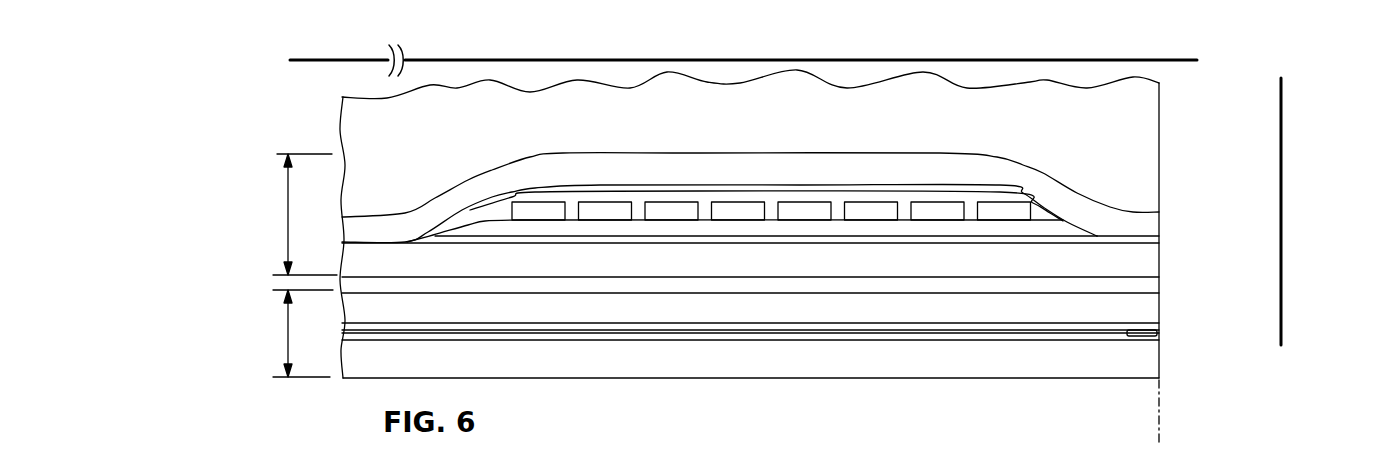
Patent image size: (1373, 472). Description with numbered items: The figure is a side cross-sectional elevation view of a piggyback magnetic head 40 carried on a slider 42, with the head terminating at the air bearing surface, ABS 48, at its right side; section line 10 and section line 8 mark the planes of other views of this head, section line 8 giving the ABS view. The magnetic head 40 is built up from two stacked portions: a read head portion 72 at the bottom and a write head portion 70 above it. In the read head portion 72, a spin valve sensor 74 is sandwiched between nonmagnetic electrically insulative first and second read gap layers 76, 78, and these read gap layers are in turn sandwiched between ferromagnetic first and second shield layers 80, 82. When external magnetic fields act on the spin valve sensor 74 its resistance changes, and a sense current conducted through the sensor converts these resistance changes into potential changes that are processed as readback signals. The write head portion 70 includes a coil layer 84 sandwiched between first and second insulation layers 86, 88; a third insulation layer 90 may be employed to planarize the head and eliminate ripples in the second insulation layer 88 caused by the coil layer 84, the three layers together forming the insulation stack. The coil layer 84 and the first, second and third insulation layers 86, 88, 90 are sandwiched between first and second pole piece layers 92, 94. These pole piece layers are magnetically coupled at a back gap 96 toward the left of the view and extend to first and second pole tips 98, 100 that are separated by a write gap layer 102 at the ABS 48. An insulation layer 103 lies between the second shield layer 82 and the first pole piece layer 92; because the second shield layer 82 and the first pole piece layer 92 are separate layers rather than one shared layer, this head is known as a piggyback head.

The section line 8- 8 is at (1297, 85).
The section line 10- 10 is at (299, 15).
The piggyback magnetic head 40 is at (320, 104).
The slider 42 is at (1145, 112).
The ABS 48 is at (1159, 435).
The write head portion 70 is at (285, 220).
The read head portion 72 is at (285, 330).
The spin valve sensor 74 is at (1157, 333).
The first read gap layer 76 is at (817, 340).
The second read gap layer 78 is at (784, 321).
The first shield layer 80 is at (922, 367).
The second shield layer 82 is at (1027, 313).
The coil layer 84 is at (802, 208).
The first insulation layer 86 is at (707, 230).
The second insulation layer 88 is at (1043, 213).
The third insulation layer 90 is at (578, 187).
The first pole piece layer 92 is at (1073, 265).
The second pole piece layer 94 is at (940, 168).
The back gap 96 is at (378, 242).
The first pole tip 98 is at (1159, 265).
The second pole tip 100 is at (1152, 221).
The write gap layer 102 is at (1159, 243).
The insulation layer 103 is at (980, 287).